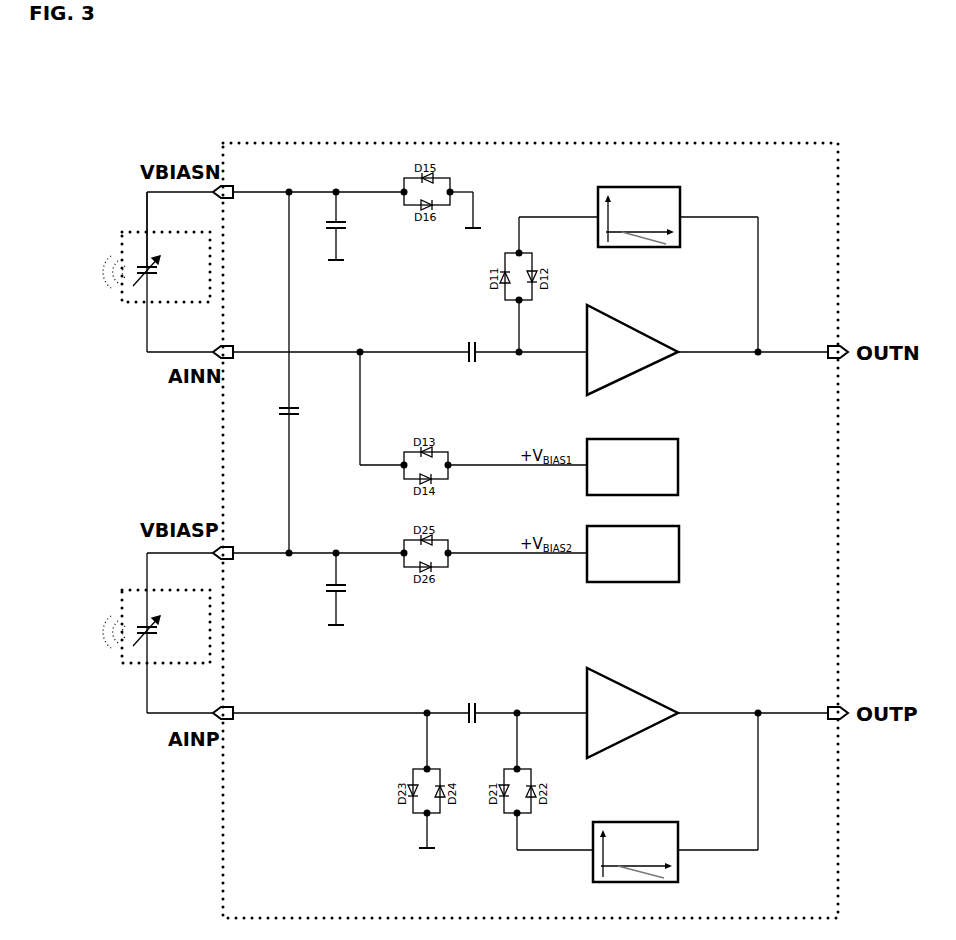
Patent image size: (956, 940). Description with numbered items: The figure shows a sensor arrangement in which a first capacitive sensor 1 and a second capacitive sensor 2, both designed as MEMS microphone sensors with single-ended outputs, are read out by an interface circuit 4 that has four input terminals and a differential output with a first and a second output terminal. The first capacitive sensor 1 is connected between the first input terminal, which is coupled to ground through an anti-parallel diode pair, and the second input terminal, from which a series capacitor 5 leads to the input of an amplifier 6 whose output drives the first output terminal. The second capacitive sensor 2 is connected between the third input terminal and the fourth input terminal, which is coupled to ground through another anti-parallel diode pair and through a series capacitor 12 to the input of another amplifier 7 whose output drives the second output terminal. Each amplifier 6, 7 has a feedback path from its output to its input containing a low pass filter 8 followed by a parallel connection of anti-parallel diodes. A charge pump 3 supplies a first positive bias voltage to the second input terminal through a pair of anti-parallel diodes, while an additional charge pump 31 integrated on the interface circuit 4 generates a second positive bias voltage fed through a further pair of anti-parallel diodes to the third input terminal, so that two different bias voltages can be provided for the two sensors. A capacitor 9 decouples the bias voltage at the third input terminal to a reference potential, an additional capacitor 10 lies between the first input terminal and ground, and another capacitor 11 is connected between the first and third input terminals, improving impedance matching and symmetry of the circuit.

The first capacitive sensor 1 is at (130, 306).
The second capacitive sensor 2 is at (130, 668).
The charge pump 3 is at (680, 464).
The additional charge pump 31 is at (767, 574).
The interface circuit 4 is at (294, 150).
The series capacitor 5 is at (466, 345).
The amplifier 6 is at (630, 323).
The another amplifier 7 is at (664, 705).
The low pass filter 8 is at (638, 822).
The capacitor 9 is at (332, 597).
The additional capacitor 10 is at (344, 228).
The another capacitor 11 is at (291, 412).
The series capacitor 12 is at (464, 710).